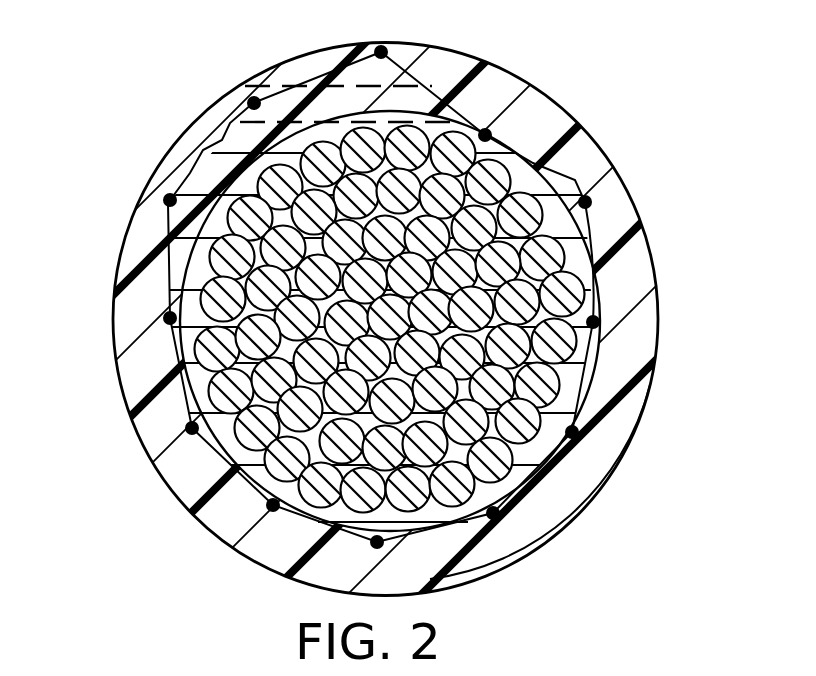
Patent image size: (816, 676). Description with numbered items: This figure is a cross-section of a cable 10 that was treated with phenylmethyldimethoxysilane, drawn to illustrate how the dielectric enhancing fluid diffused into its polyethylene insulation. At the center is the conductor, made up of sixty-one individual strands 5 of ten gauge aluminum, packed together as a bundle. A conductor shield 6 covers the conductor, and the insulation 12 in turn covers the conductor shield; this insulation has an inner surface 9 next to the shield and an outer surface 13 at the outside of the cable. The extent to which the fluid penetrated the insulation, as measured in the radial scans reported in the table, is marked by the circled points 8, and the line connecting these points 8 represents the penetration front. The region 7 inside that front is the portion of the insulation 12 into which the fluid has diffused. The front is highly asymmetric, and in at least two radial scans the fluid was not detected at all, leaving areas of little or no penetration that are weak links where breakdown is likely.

The individual strands 5 is at (262, 432).
The conductor shield 6 is at (400, 108).
The region 7 is at (587, 202).
The circled points 8 is at (253, 103).
The inner surface 9 is at (186, 272).
The cable 10 is at (624, 118).
The insulation 12 is at (140, 368).
The outer surface 13 is at (618, 468).